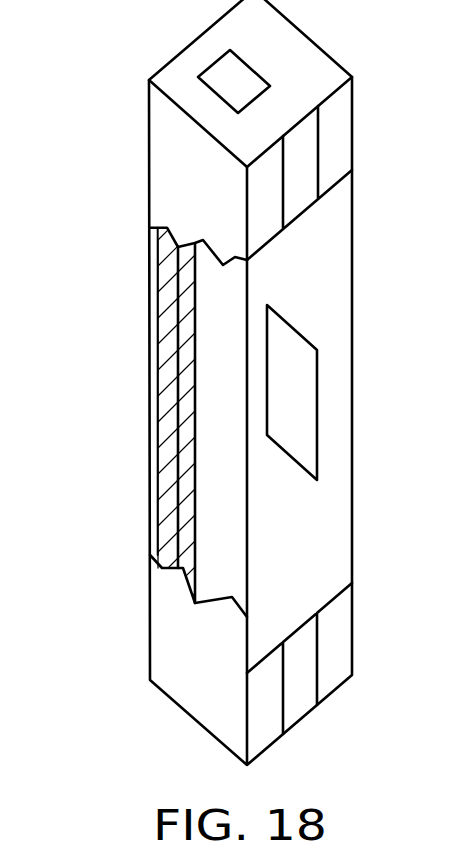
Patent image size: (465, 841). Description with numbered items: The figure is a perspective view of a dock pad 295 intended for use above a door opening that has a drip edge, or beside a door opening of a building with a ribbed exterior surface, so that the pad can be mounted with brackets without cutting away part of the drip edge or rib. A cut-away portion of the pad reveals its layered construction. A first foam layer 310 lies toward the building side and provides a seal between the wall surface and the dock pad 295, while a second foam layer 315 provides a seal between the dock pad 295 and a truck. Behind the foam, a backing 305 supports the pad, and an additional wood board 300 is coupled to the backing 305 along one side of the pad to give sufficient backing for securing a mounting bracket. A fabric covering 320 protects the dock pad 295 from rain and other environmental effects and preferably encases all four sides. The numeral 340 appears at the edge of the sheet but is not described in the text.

The cartridge assembly 295 is at (378, 140).
The housing body 320 is at (172, 160).
The cavity / cut-away section 315 is at (222, 302).
The outer layer 300 is at (183, 360).
The inner layer 305 is at (163, 433).
The wall 310 is at (153, 502).
The adjacent component 340 is at (444, 799).